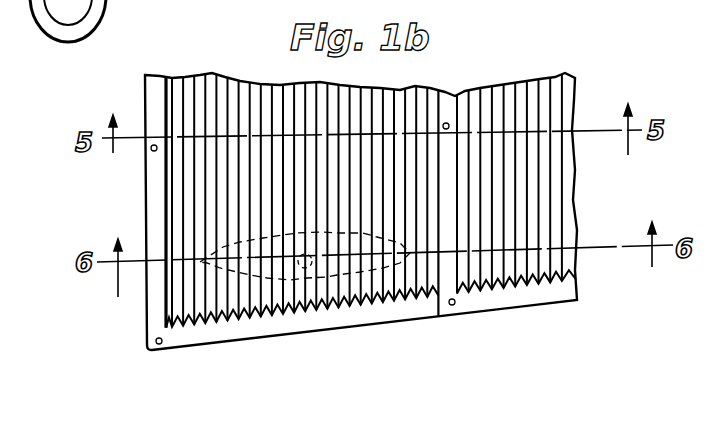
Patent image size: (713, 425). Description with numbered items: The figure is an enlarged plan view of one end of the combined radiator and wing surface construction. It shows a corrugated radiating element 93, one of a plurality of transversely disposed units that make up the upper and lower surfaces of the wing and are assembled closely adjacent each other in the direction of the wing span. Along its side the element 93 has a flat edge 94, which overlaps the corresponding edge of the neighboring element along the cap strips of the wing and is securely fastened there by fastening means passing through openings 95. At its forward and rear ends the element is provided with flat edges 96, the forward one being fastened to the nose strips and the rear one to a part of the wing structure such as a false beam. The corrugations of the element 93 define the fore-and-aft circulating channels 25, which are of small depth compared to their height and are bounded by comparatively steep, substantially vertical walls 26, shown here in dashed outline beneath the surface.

The corrugated radiating element 93 is at (210, 88).
The side flat edge 94 is at (145, 88).
The opening 95 is at (446, 122).
The flat edge 96 is at (363, 312).
The circulating channel 25 is at (238, 275).
The wall 26 is at (307, 268).